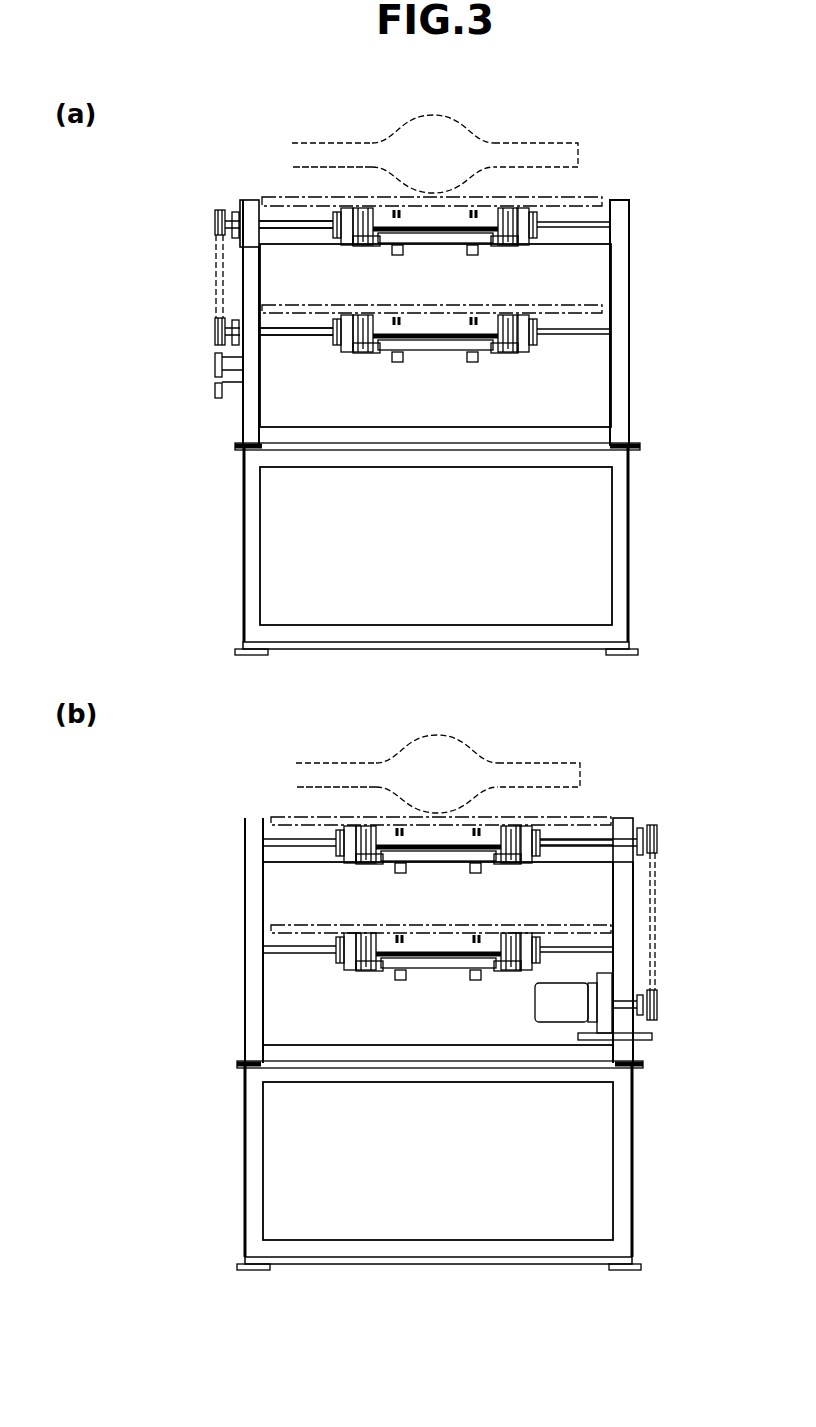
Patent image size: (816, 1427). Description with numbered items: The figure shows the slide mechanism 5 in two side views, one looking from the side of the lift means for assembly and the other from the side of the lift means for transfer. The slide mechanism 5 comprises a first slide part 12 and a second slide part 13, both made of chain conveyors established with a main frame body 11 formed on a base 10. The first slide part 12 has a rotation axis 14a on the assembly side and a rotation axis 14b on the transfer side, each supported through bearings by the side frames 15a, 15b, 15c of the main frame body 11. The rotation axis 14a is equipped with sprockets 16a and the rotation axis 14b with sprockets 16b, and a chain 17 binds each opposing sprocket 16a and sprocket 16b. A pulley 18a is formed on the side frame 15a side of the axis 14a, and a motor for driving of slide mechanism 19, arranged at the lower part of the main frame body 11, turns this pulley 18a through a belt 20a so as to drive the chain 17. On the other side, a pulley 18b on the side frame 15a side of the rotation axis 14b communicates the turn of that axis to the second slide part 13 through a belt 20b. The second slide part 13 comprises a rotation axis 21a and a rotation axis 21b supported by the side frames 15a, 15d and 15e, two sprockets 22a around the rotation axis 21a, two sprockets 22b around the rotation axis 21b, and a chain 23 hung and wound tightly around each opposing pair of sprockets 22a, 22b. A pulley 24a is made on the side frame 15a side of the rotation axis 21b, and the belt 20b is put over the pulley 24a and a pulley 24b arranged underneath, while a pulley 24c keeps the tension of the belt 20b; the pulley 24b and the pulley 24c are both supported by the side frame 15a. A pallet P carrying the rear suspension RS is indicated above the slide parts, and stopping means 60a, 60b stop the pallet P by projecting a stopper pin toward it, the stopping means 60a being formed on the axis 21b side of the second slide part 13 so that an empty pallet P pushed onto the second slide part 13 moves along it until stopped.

The slide mechanism 5 is at (692, 195).
The base 10 is at (243, 561).
The main frame body 11 is at (622, 297).
The first slide part 12 is at (552, 231).
The second slide part 13 is at (552, 339).
The rotation axis 14a is at (590, 842).
The rotation axis 14b is at (290, 222).
The side frame 15a is at (249, 200).
The side frame 15b is at (346, 247).
The side frame 15c is at (522, 247).
The side frame 15d is at (346, 354).
The side frame 15e is at (522, 354).
The sprocket 16a is at (366, 828).
The sprocket 16b is at (363, 210).
The chain 17 is at (368, 250).
The pulley 18a is at (660, 840).
The pulley 18b is at (214, 222).
The motor for driving of slide mechanism 19 is at (568, 1022).
The belt 20a is at (659, 914).
The belt 20b is at (215, 288).
The rotation axis 21a is at (445, 928).
The rotation axis 21b is at (288, 323).
The sprocket 22a is at (368, 973).
The sprocket 22b is at (365, 355).
The chain 23 is at (368, 357).
The pulley 24a is at (220, 337).
The pulley 24b is at (217, 370).
The pulley 24c is at (217, 395).
The stopping means 60a is at (491, 264).
The stopping means 60b is at (494, 882).
The pallet P is at (598, 196).
The rear suspension RS is at (558, 150).